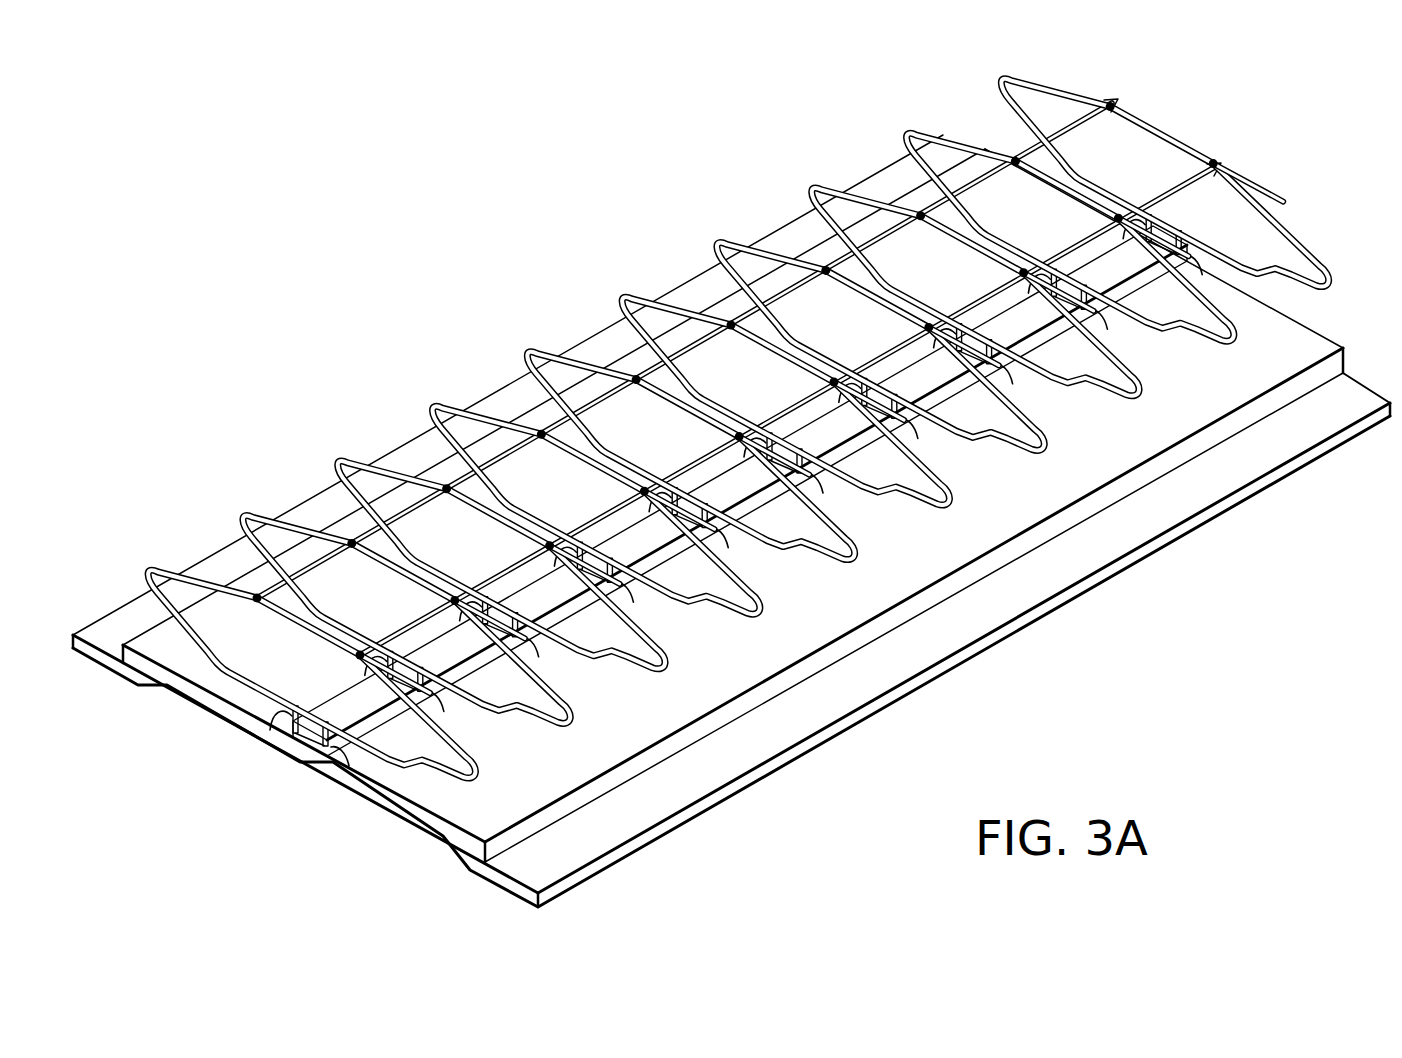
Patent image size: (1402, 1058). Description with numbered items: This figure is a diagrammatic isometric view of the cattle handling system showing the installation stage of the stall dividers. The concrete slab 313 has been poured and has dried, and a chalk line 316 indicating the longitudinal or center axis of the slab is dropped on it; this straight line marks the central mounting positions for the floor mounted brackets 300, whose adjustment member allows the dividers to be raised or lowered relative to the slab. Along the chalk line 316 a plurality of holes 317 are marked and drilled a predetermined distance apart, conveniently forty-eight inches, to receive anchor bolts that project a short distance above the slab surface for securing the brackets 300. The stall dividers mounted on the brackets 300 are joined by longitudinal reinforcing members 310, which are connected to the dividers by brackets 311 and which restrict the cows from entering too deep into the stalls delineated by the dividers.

The stall base floor mounted bracket 300 is at (438, 698).
The longitudinal reinforcing member 310 is at (788, 290).
The bracket 311 is at (652, 482).
The concrete slab 313 is at (223, 712).
The chalk line 316 is at (367, 760).
The hole 317 is at (292, 738).